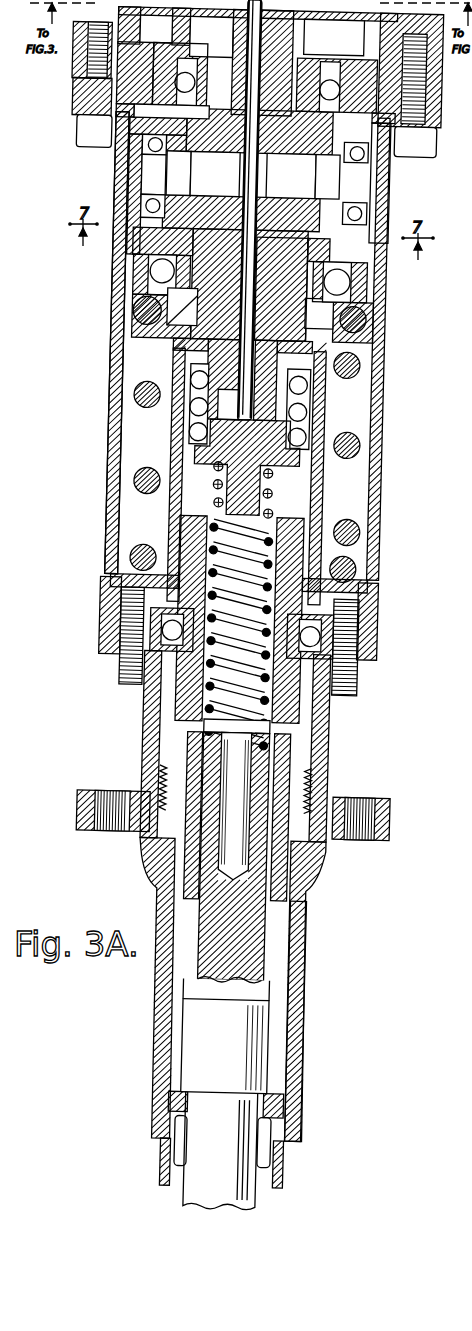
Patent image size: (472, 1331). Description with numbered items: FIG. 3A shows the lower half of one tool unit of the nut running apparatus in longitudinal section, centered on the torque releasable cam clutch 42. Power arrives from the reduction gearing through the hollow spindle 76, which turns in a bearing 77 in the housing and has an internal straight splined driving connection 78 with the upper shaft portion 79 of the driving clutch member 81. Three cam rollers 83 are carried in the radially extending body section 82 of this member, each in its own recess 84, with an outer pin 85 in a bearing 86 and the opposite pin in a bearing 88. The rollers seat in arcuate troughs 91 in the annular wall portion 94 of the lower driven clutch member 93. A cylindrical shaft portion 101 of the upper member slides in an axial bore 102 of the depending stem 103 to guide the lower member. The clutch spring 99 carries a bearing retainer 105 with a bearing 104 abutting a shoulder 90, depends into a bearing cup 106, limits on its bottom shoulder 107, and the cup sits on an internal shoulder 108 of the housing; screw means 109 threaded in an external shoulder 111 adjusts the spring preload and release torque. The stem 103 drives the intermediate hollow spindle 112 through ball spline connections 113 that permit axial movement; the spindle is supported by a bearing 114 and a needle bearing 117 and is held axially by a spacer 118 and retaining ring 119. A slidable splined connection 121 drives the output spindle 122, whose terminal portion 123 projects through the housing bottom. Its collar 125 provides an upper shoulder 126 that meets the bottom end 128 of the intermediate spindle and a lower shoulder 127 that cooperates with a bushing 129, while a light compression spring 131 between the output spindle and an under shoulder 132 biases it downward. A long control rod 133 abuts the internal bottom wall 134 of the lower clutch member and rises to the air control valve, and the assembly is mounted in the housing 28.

The housing 28 is at (87, 790).
The clutch 42 is at (380, 173).
The hollow spindle 76 is at (170, 75).
The bearing 77 is at (157, 88).
The internal straight splined driving connection 78 is at (363, 69).
The upper axially extending shaft portion 79 is at (290, 92).
The driving or upper clutch member 81 is at (211, 215).
The radially extending body section 82 is at (105, 198).
The cam rollers 83 is at (173, 163).
The radially extending recess 84 is at (363, 213).
The pin 85 is at (153, 175).
The bearing 86 is at (153, 217).
The bearing 88 is at (290, 200).
The shoulder 90 is at (160, 263).
The arcuate pockets or troughs 91 is at (333, 207).
The lower driven clutch member 93 is at (375, 283).
The annular wall portion 94 is at (335, 248).
The clutch spring 99 is at (367, 423).
The cylindrical shaft portion 101 is at (277, 340).
The axial bore 102 is at (267, 410).
The depending stem 103 is at (195, 337).
The bearing 104 is at (143, 272).
The bearing retainer 105 is at (128, 293).
The bearing cup 106 is at (123, 423).
The bottom annular shoulder 107 is at (127, 570).
The internal annular shoulder 108 is at (360, 597).
The screw means 109 is at (123, 620).
The external shoulder 111 is at (110, 660).
The intermediate hollow spindle 112 is at (167, 443).
The ball spline and straight groove connections 113 is at (183, 363).
The bearing 114 is at (353, 640).
The needle bearing 117 is at (180, 773).
The spacer 118 is at (300, 717).
The retaining ring 119 is at (288, 735).
The slidable straight splined driving connection 121 is at (203, 747).
The output spindle 122 is at (260, 967).
The terminal portion 123 is at (253, 1200).
The collar 125 is at (180, 1047).
The upper shoulder 126 is at (277, 997).
The lower shoulder 127 is at (290, 1090).
The bottom end 128 is at (277, 917).
The bushing 129 is at (287, 1107).
The light compression spring 131 is at (257, 517).
The under shoulder 132 is at (283, 473).
The control rod 133 is at (247, 137).
The internal bottom wall 134 is at (231, 421).